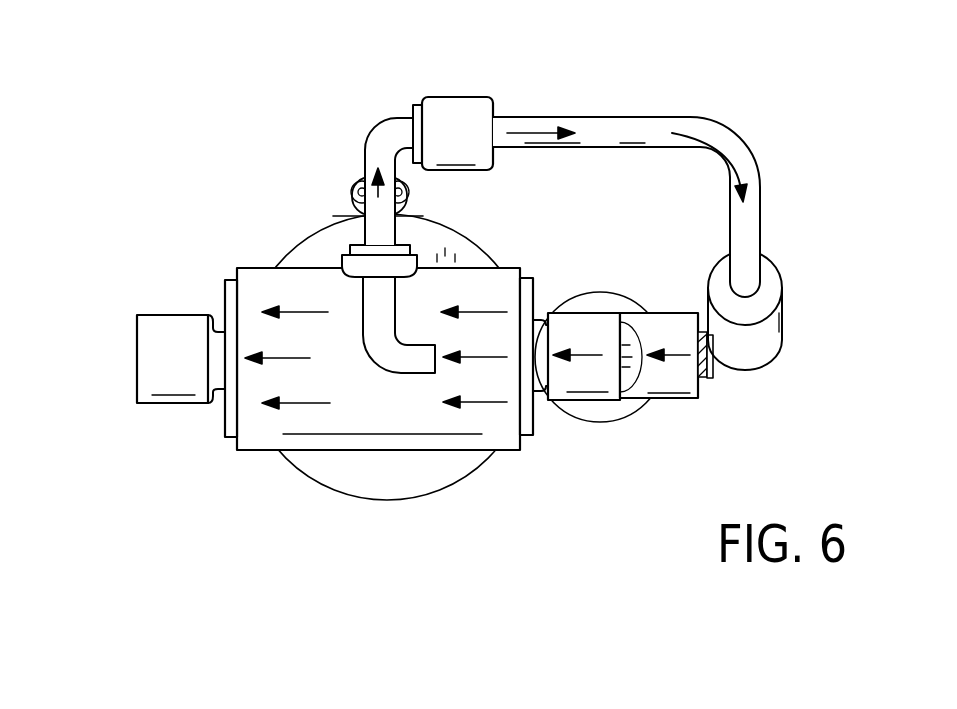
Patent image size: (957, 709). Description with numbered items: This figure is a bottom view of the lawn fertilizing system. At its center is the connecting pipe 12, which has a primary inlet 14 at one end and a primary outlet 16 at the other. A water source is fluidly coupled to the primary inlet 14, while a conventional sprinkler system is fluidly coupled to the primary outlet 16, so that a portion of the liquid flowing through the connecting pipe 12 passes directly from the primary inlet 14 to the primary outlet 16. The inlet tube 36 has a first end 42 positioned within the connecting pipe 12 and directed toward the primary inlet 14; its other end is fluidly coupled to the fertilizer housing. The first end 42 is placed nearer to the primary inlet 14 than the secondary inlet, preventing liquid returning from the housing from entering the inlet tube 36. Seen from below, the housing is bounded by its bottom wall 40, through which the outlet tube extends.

The connecting pipe 12 is at (237, 452).
The primary inlet 14 is at (605, 393).
The primary outlet 16 is at (153, 398).
The inlet tube 36 is at (720, 145).
The bottom wall 40 is at (442, 467).
The first end 42 is at (437, 360).